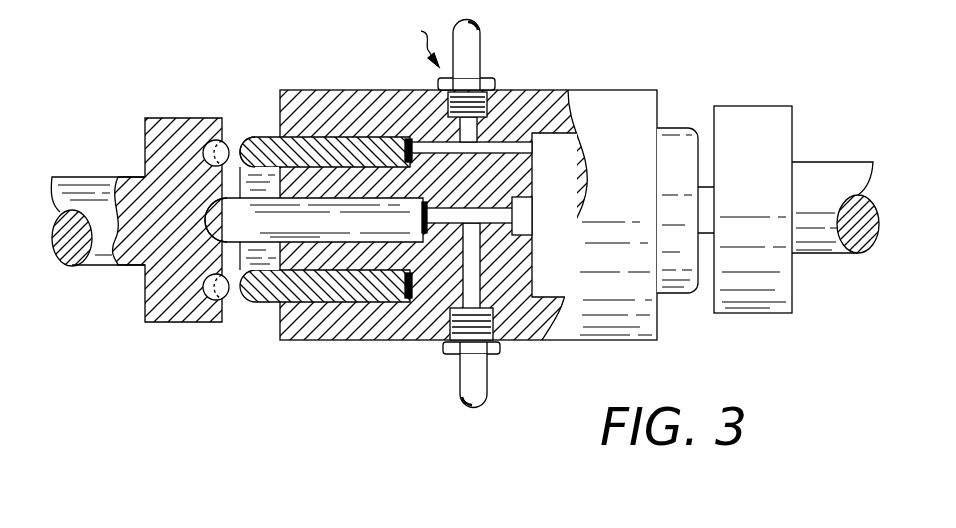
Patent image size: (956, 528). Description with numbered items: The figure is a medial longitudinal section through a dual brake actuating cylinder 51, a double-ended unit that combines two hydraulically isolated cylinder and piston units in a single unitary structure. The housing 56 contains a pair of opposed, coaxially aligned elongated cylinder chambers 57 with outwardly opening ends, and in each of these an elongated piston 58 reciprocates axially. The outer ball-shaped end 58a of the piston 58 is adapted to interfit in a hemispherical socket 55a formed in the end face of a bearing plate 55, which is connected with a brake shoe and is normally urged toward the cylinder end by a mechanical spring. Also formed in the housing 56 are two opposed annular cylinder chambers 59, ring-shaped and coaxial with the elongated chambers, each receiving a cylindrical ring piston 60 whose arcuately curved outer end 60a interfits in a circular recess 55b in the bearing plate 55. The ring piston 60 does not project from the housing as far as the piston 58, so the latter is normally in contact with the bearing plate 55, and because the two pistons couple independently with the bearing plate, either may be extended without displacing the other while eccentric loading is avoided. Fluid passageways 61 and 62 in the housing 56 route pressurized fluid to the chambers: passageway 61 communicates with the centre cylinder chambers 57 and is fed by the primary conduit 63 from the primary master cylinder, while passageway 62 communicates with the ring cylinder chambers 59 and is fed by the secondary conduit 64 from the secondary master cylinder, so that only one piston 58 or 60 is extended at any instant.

The brake actuating cylinder 51 is at (414, 44).
The bearing plate 55 is at (192, 322).
The hemispherical socket 55a is at (150, 298).
The circular recess 55b is at (222, 142).
The housing 56 is at (648, 56).
The elongated cylinder chamber 57 is at (430, 233).
The elongated piston 58 is at (232, 242).
The ball-shaped end 58a is at (222, 200).
The annular cylinder chamber 59 is at (424, 135).
The ring piston 60 is at (272, 140).
The outer end of ring piston 60a is at (240, 150).
The fluid passageway 61 is at (478, 277).
The fluid passageway 62 is at (500, 107).
The primary conduit 63 is at (485, 380).
The secondary conduit 64 is at (476, 63).